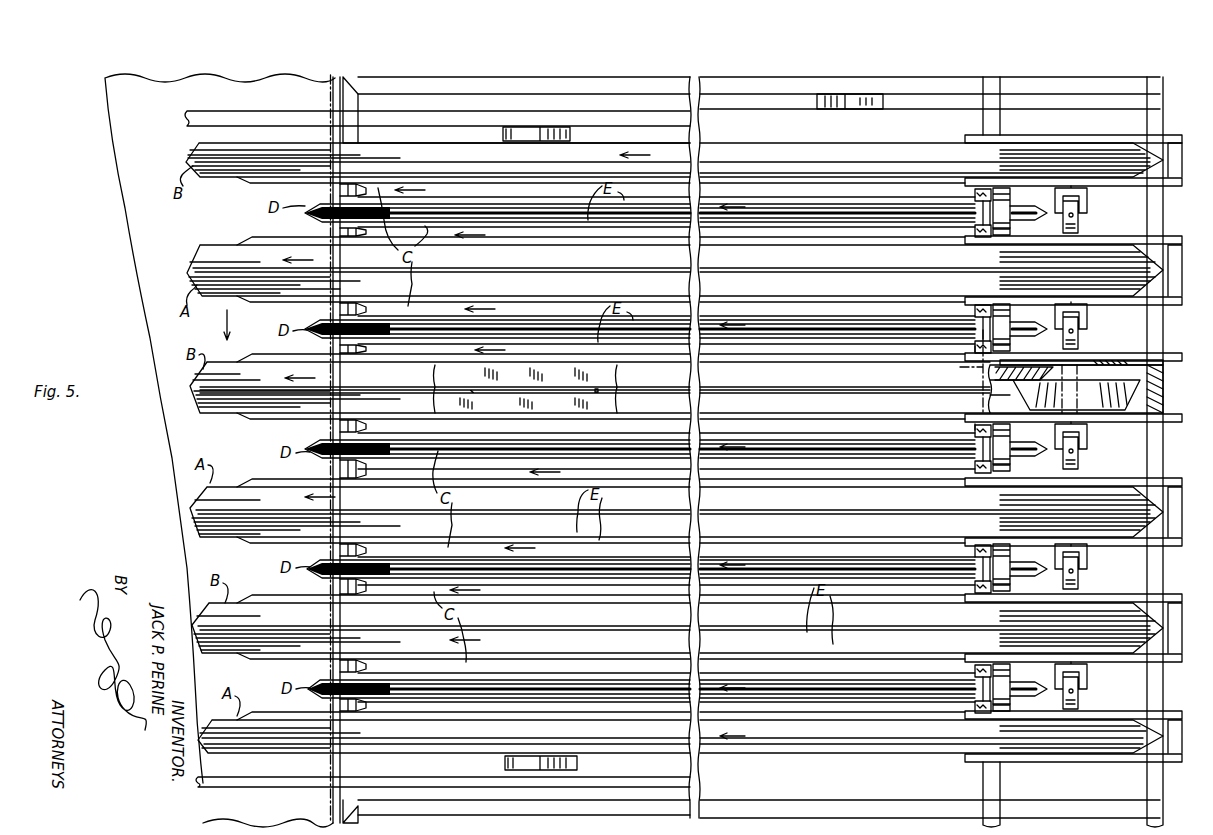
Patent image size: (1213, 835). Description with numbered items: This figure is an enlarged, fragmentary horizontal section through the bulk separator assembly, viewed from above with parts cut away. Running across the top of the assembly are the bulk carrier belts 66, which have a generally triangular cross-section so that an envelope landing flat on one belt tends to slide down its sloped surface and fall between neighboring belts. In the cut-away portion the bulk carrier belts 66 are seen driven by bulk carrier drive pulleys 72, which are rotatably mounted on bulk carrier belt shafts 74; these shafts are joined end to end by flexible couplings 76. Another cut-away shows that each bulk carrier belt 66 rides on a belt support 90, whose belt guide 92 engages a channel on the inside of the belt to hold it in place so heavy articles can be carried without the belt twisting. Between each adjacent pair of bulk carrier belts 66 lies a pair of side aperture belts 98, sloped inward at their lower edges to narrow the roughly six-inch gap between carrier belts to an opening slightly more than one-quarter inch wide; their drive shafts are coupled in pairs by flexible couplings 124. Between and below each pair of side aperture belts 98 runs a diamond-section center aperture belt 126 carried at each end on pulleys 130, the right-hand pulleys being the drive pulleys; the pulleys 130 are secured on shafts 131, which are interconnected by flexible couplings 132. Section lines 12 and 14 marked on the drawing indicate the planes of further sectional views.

The section line 12 is at (963, 349).
The section line 14 is at (983, 367).
The bulk carrier belt 66 is at (1134, 266).
The bulk carrier drive pulley 72 is at (1130, 367).
The bulk carrier belt shaft 74 is at (1087, 393).
The flexible coupling 76 is at (1088, 199).
The belt support 90 is at (600, 375).
The belt guide 92 is at (600, 404).
The side aperture belt 98 is at (550, 302).
The flexible coupling 124 is at (997, 186).
The center aperture belt 126 is at (774, 208).
The center aperture belt pulley 130 is at (1032, 212).
The shaft 131 is at (1004, 227).
The flexible coupling 132 is at (975, 193).